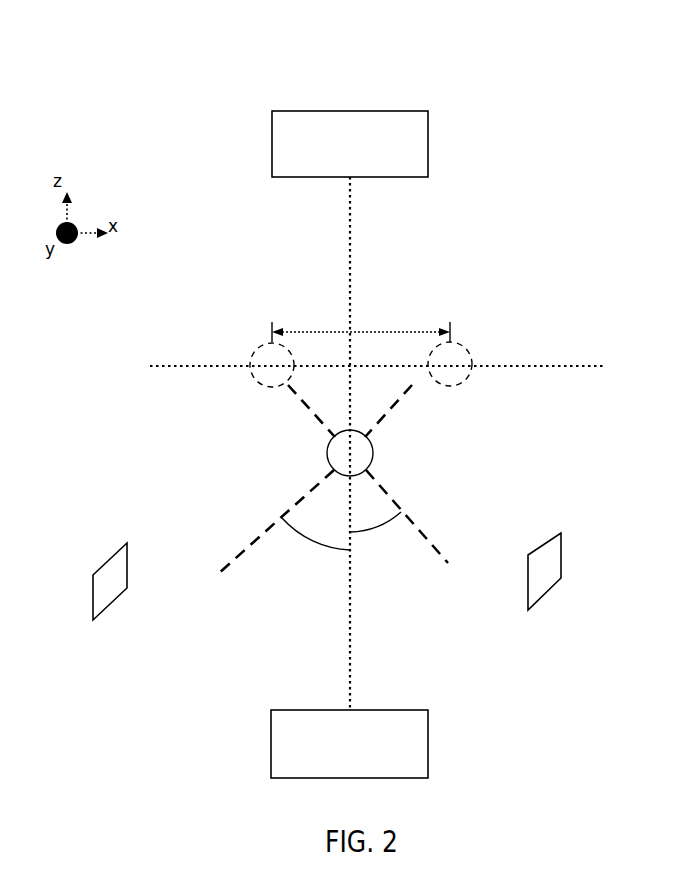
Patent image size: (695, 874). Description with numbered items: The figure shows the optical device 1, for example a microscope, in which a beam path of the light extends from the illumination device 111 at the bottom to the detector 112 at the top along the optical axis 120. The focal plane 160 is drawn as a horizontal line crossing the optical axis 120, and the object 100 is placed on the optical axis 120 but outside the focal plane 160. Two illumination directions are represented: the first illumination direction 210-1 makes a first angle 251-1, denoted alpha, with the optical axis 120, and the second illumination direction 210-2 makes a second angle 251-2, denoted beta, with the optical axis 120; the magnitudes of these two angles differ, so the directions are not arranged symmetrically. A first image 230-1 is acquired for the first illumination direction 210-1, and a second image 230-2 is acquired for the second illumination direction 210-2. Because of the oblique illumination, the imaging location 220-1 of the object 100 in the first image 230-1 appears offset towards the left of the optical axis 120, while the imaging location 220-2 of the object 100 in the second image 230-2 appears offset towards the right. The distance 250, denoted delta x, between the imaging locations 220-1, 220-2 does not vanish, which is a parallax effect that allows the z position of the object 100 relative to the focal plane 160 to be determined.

The optical device 1 is at (566, 70).
The object 100 is at (328, 454).
The illumination device 111 is at (273, 722).
The detector 112 is at (273, 122).
The optical axis 120 is at (350, 288).
The focal plane 160 is at (193, 367).
The first illumination direction 210-1 is at (438, 553).
The second illumination direction 210-2 is at (227, 565).
The imaging location of the object in the first image 220-1 is at (260, 388).
The imaging location of the object in the second image 220-2 is at (450, 388).
The first image 230-1 is at (561, 555).
The second image 230-2 is at (94, 577).
The distance 250 is at (427, 332).
The first angle 251-1 is at (372, 533).
The second angle 251-2 is at (328, 555).